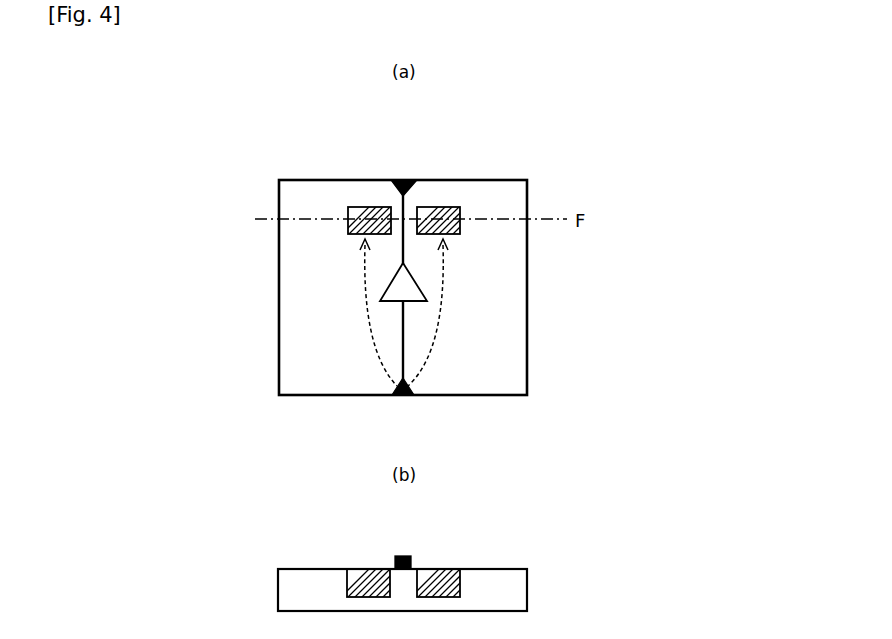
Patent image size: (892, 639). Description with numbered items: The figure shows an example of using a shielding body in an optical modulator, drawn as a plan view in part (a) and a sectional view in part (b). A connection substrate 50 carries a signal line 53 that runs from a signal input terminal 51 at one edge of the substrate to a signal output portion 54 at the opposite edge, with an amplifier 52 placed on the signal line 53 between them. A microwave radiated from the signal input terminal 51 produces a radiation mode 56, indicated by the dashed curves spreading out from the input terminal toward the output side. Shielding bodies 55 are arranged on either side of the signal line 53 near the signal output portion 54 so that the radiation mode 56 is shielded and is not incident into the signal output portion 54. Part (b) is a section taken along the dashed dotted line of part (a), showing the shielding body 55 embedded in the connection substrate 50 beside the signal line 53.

The connection substrate 50 is at (536, 300).
The signal input terminal 51 is at (408, 397).
The amplifier 52 is at (402, 288).
The signal line 53 is at (402, 245).
The signal output portion 54 is at (410, 180).
The shielding body 55 is at (448, 208).
The radiation mode 56 is at (437, 340).